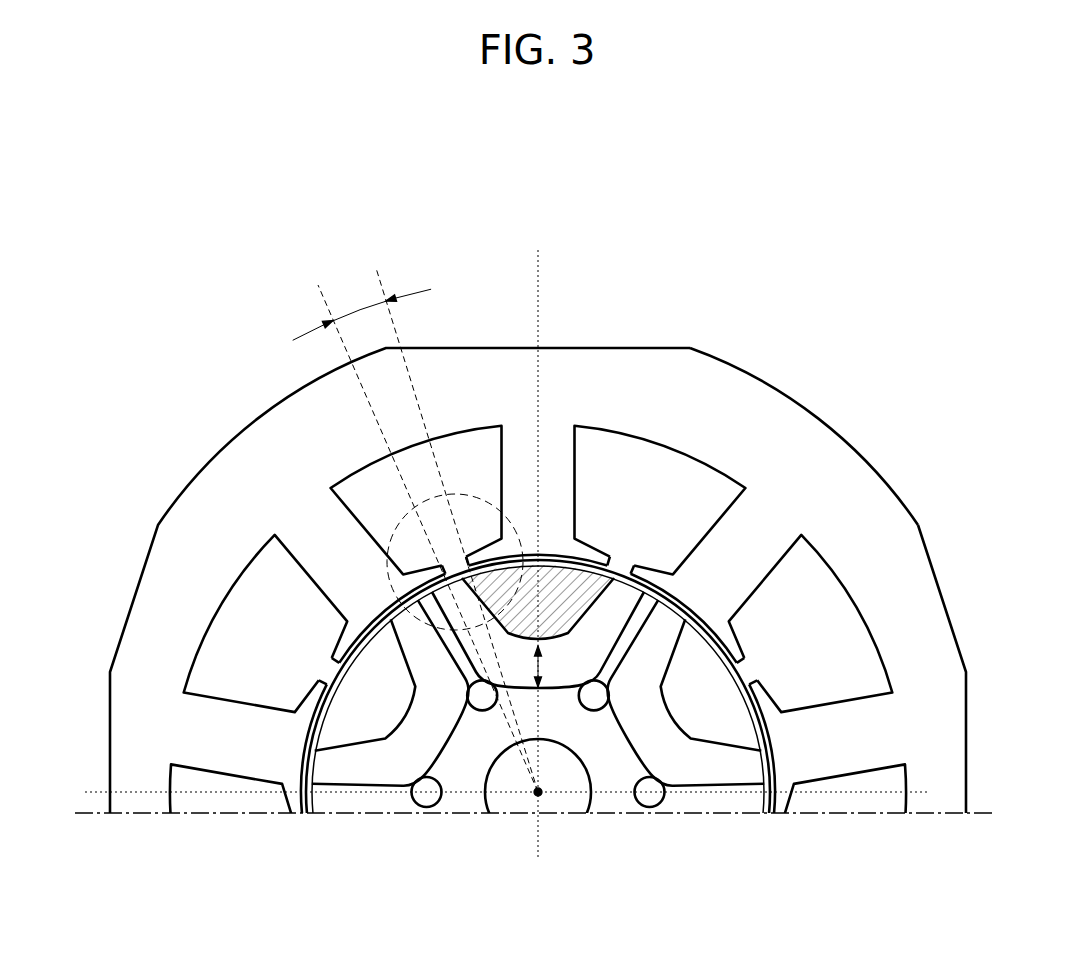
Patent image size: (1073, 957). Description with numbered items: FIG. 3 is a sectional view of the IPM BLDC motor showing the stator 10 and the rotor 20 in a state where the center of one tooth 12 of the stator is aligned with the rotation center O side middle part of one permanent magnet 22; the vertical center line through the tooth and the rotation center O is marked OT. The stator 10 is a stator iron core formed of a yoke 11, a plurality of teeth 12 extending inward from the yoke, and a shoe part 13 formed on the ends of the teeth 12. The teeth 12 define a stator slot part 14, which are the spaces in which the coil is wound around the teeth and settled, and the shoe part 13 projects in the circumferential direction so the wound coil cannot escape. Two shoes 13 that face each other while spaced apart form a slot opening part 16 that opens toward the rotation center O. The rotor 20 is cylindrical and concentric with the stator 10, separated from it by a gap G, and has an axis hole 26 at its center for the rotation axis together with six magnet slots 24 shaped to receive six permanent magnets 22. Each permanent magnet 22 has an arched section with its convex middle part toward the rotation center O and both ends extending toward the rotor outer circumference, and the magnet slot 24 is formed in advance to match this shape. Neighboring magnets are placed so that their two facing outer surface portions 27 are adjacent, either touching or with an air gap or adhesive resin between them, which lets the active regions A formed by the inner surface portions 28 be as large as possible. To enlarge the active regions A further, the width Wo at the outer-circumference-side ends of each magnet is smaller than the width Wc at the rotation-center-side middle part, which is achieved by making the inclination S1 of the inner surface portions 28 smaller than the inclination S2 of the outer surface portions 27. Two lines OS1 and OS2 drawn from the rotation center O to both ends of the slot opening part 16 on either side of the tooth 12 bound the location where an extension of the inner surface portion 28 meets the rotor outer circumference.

The stator 10 is at (828, 420).
The yoke 11 is at (908, 540).
The teeth 12 is at (760, 525).
The shoe part 13 is at (643, 572).
The stator slot part 14 is at (643, 565).
The slot opening part 16 is at (677, 473).
The rotor 20 is at (458, 770).
The permanent magnets 22 is at (740, 762).
The magnet slots 24 is at (624, 620).
The axis hole 26 is at (568, 773).
The outer surface portions 27 is at (462, 650).
The inner surface portions 28 is at (618, 560).
The rotation center O is at (538, 793).
The active regions A is at (560, 595).
The gap G is at (340, 632).
The tooth center line OT is at (537, 538).
The line OS1 is at (413, 528).
The line OS2 is at (443, 517).
The inclination of the inner surface portions S1 is at (505, 550).
The inclination of the outer surface portions S2 is at (388, 618).
The width of outer circumference side both ends Wo is at (455, 562).
The width of rotation center side middle part Wc is at (557, 666).